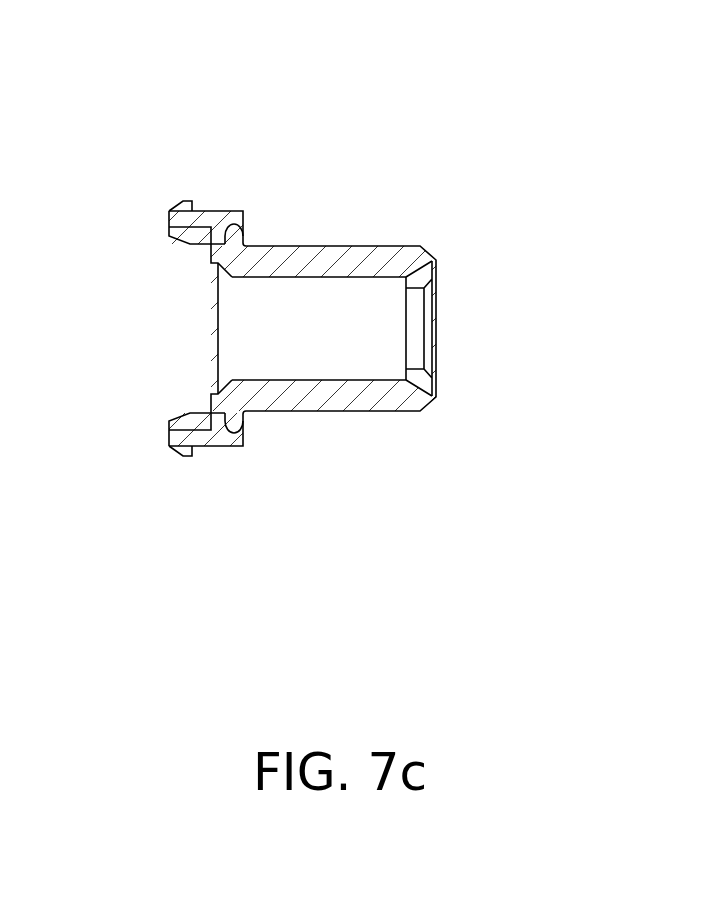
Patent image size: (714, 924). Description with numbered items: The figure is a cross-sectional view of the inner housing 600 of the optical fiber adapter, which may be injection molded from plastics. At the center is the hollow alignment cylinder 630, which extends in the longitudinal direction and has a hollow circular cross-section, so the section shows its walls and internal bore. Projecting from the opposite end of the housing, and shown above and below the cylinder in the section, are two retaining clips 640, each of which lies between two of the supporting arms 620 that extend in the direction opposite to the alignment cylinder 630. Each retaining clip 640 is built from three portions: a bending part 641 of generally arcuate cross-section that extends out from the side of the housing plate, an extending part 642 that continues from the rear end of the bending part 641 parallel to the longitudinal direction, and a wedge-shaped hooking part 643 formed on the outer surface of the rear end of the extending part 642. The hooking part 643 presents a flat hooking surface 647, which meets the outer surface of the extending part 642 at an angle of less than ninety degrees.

The inner housing 600 is at (290, 132).
The supporting arm 620 is at (247, 217).
The alignment cylinder 630 is at (377, 265).
The retaining clip 640 is at (183, 189).
The bending part 641 is at (222, 223).
The extending part 642 is at (198, 218).
The hooking part 643 is at (181, 199).
The hooking surface 647 is at (192, 204).